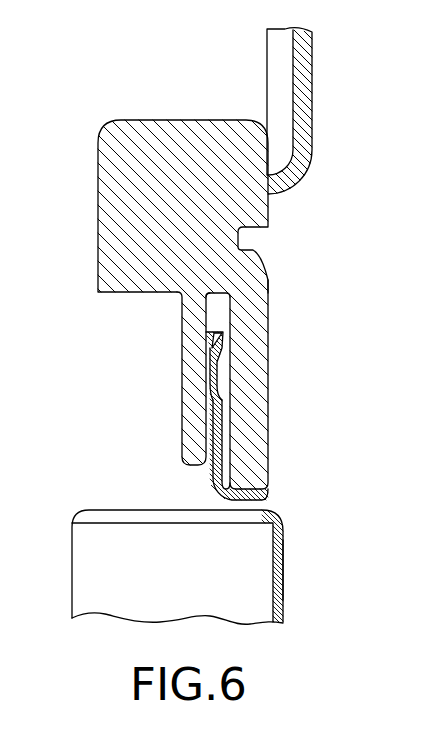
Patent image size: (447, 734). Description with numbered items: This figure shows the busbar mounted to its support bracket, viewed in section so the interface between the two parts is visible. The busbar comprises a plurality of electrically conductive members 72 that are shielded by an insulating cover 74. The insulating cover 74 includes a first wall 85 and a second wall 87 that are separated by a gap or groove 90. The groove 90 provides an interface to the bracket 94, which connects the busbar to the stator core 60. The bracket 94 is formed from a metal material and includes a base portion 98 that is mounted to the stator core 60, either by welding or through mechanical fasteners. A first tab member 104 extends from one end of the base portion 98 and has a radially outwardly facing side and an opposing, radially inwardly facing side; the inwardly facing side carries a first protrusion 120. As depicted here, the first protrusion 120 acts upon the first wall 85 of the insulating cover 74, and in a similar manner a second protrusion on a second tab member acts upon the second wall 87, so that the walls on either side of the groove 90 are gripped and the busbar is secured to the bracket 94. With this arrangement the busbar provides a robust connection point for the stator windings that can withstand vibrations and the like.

The stator core 60 is at (170, 562).
The electrically conductive members 72 is at (323, 183).
The insulating cover 74 is at (146, 147).
The first wall 85 is at (196, 383).
The second wall 87 is at (250, 415).
The groove 90 is at (213, 313).
The bracket 94 is at (293, 558).
The base portion 98 is at (285, 580).
The first tab member 104 is at (223, 443).
The first protrusion 120 is at (216, 372).